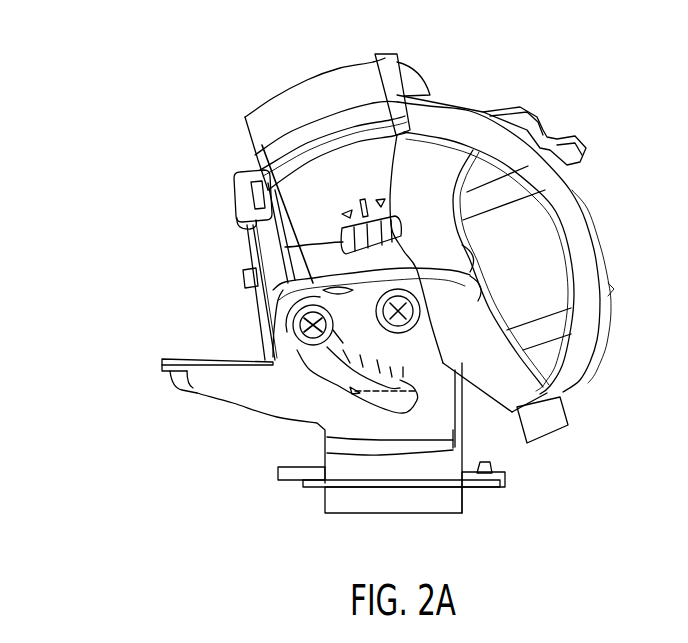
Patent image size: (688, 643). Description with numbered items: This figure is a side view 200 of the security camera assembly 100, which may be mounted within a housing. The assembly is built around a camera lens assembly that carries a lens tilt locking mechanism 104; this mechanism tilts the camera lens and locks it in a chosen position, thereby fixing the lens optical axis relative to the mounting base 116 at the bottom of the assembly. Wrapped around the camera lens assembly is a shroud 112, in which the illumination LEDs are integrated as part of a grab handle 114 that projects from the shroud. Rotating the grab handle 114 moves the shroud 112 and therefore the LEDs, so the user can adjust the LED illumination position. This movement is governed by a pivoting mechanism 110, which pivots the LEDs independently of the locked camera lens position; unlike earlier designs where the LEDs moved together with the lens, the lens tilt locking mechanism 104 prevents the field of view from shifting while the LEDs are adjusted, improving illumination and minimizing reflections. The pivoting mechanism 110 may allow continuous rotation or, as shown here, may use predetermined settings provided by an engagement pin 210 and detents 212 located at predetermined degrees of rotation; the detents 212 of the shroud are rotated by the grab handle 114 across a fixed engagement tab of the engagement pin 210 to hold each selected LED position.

The side view 200 is at (146, 37).
The security camera assembly 100 is at (179, 129).
The lens tilt locking mechanism 104 is at (310, 318).
The pivoting mechanism 110 is at (95, 168).
The shroud 112 is at (565, 228).
The grab handle 114 is at (333, 68).
The mounting base 116 is at (481, 490).
The engagement pin 210 is at (243, 213).
The detents 212 is at (293, 293).